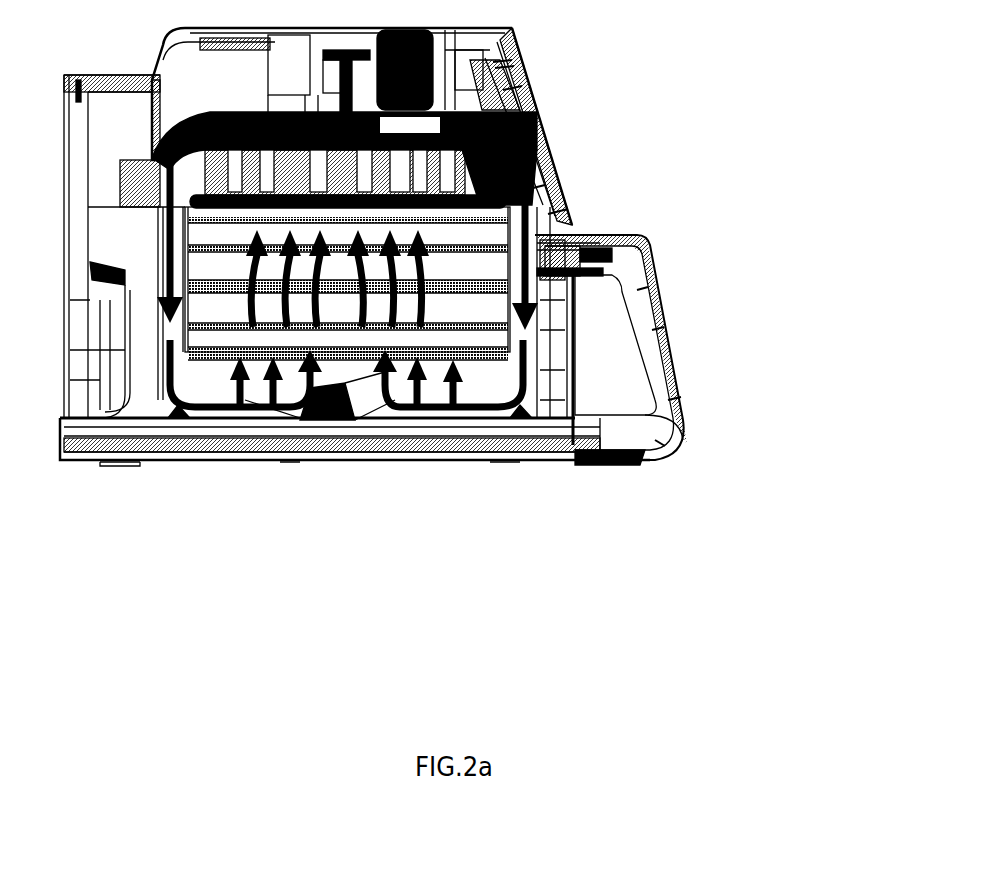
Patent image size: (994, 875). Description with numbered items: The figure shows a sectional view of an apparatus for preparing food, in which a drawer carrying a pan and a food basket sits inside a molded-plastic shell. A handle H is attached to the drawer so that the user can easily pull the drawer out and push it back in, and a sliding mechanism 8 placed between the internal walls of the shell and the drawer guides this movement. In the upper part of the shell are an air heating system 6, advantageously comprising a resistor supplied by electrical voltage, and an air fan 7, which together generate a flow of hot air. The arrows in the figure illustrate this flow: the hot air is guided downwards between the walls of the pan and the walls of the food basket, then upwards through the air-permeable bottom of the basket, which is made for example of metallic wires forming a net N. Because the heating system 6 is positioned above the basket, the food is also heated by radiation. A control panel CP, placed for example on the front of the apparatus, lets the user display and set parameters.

The control panel CP is at (530, 73).
The air fan 7 is at (527, 97).
The air heating system 6 is at (530, 187).
The handle H is at (653, 300).
The net N is at (322, 423).
The sliding mechanism 8 is at (383, 440).